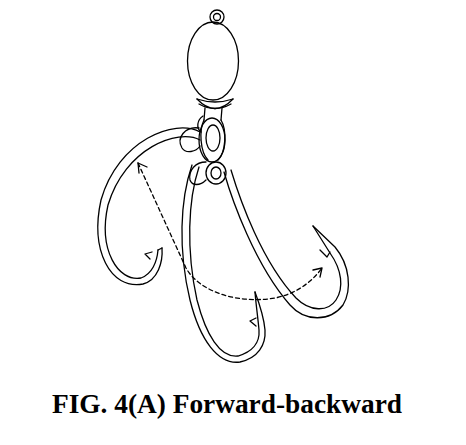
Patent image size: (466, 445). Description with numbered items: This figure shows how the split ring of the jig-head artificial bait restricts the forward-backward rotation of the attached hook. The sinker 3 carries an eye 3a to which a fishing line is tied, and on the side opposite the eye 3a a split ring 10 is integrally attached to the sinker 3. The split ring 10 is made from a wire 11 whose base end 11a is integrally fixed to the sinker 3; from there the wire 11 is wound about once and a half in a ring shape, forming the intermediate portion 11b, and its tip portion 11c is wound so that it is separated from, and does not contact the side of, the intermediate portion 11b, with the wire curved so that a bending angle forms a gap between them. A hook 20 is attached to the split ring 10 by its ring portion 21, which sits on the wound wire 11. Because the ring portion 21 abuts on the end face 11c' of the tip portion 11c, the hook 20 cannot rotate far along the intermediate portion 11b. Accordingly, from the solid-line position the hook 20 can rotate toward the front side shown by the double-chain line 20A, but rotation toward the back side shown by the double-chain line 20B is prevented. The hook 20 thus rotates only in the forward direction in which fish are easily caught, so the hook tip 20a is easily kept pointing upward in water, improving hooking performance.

The sinker 3 is at (238, 61).
The eye 3a is at (224, 18).
The split ring 10 is at (231, 130).
The wire 11 is at (224, 138).
The one end (base end) of the wire 11a is at (228, 109).
The intermediate portion 11b is at (202, 115).
The tip portion 11c is at (169, 124).
The end face of the tip portion 11c' is at (181, 173).
The ring portion 21 is at (227, 160).
The hook 20 is at (193, 320).
The hook tip 20a is at (263, 312).
The double-chain line (front-side position of the hook) 20A is at (340, 249).
The double-chain line (back-side position of the hook) 20B is at (105, 245).